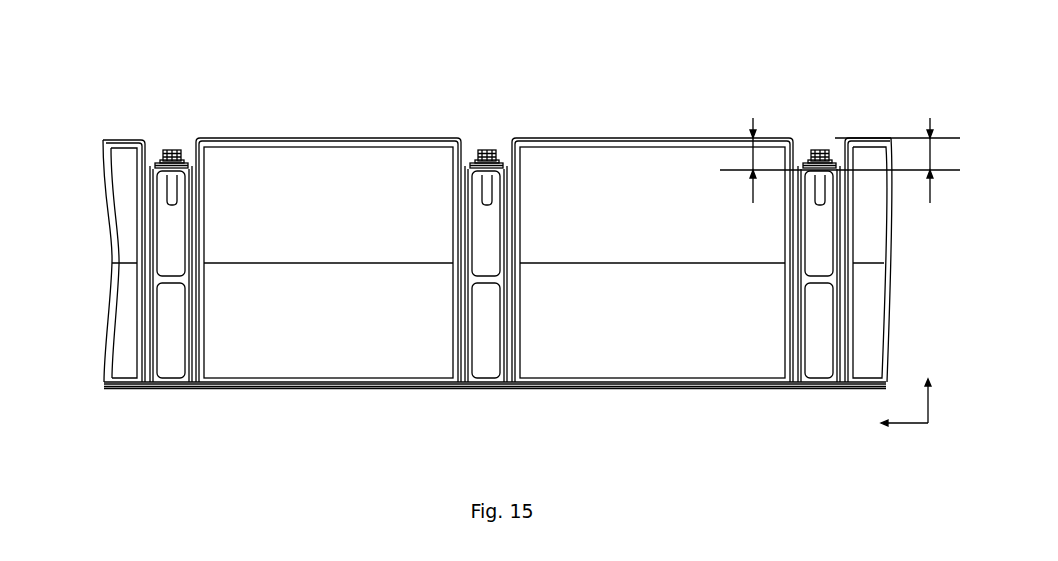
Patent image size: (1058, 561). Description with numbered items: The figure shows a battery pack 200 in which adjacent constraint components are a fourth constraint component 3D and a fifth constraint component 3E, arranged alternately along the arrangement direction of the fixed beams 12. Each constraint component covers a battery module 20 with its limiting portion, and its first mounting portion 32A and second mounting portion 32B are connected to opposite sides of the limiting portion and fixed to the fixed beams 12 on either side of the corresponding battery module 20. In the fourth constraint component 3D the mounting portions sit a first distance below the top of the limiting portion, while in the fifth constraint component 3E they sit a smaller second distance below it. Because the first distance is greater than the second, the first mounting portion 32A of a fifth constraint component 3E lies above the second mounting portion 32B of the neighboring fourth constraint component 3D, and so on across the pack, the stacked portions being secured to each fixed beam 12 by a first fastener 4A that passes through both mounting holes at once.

The battery pack 200 is at (489, 21).
The fourth constraint component 3D is at (118, 140).
The fifth constraint component 3E is at (322, 140).
The first fastener 4A is at (168, 150).
The first mounting portion 32A is at (182, 166).
The second mounting portion 32B is at (165, 170).
The fixed beam 12 is at (163, 355).
The battery module 20 is at (320, 357).